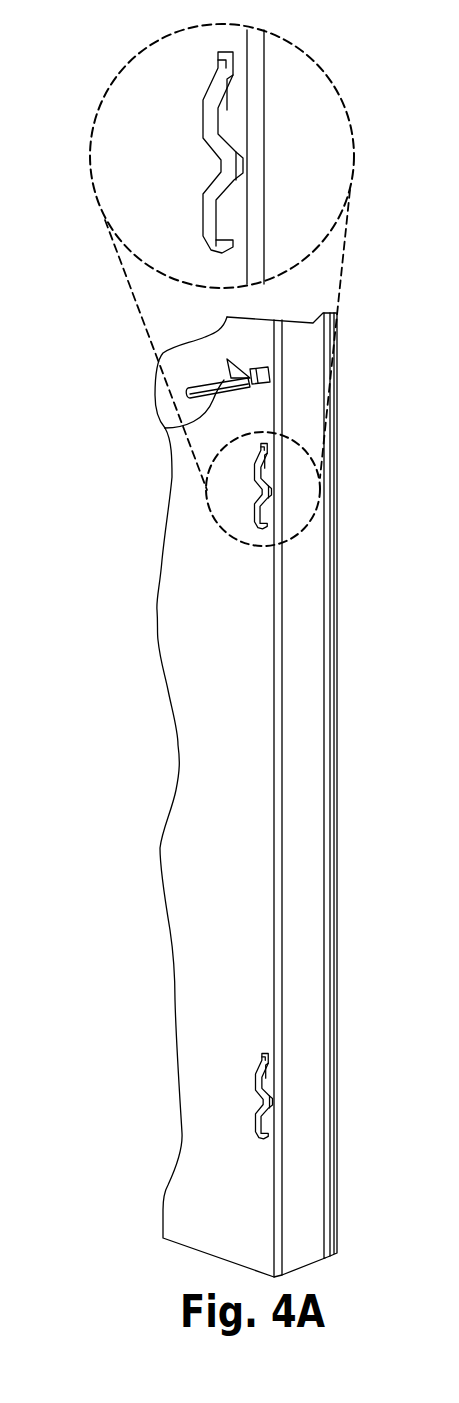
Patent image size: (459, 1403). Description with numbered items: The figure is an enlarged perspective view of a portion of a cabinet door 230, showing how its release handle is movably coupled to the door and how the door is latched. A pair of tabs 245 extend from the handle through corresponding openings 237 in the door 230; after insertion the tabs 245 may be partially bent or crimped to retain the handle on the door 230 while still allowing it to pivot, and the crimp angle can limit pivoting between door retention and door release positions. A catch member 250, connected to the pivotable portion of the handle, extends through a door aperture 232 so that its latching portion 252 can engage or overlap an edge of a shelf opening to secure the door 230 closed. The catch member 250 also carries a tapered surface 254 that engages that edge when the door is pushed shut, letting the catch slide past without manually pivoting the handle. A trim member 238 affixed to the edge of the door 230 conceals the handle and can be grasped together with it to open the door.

The door 230 is at (237, 632).
The door aperture 232 is at (277, 378).
The openings 237 is at (327, 538).
The trim member 238 is at (337, 777).
The tabs 245 is at (267, 460).
The catch member 250 is at (168, 428).
The latching portion 252 is at (247, 372).
The tapered surface 254 is at (198, 383).